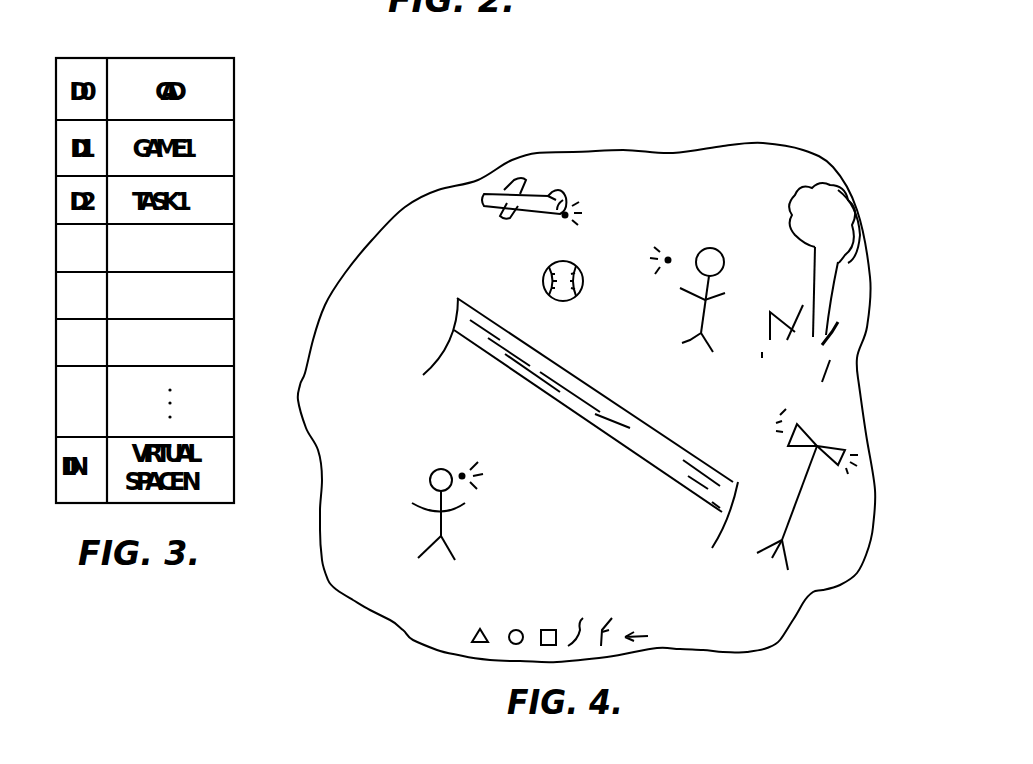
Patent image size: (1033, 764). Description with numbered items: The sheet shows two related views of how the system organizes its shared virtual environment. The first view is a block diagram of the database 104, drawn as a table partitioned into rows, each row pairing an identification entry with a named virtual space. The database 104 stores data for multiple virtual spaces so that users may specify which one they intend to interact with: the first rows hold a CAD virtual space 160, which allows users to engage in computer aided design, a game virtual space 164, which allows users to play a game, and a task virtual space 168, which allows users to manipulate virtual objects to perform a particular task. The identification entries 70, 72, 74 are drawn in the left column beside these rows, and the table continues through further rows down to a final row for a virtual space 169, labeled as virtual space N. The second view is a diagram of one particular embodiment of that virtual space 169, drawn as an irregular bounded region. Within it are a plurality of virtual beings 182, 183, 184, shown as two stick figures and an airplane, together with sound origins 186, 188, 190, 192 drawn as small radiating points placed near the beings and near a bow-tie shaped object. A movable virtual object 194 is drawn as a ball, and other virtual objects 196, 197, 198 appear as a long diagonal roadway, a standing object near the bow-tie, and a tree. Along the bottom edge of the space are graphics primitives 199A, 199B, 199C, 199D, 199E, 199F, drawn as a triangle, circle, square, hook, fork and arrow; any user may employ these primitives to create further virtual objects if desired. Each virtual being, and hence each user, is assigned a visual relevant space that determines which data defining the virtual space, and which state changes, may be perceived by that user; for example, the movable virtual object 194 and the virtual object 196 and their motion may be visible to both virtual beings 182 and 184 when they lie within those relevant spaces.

In FIG. 3, the database 104 is at (134, 52).
In FIG. 3, the first identification entry ID0 70 is at (56, 90).
In FIG. 3, the second identification entry ID1 72 is at (56, 147).
In FIG. 3, the third identification entry ID2 74 is at (56, 202).
In FIG. 3, the CAD virtual space 160 is at (234, 93).
In FIG. 3, the game virtual space 164 is at (234, 149).
In FIG. 3, the task virtual space 168 is at (234, 201).
In FIG. 3, the virtual space 169 is at (234, 466).
In FIG. 4, the virtual space 169 is at (835, 165).
In FIG. 4, the virtual being 182 is at (434, 468).
In FIG. 4, the virtual being 183 is at (482, 210).
In FIG. 4, the virtual being 184 is at (708, 247).
In FIG. 4, the sound origin 186 is at (460, 465).
In FIG. 4, the sound origin 188 is at (667, 253).
In FIG. 4, the sound origin 190 is at (833, 443).
In FIG. 4, the sound origin 192 is at (587, 201).
In FIG. 4, the movable virtual object 194 is at (568, 299).
In FIG. 4, the virtual object 196 is at (455, 305).
In FIG. 4, the virtual object 197 is at (790, 512).
In FIG. 4, the virtual object 198 is at (813, 275).
In FIG. 4, the graphics primitive 199A is at (470, 636).
In FIG. 4, the graphics primitive 199B is at (509, 630).
In FIG. 4, the graphics primitive 199C is at (547, 628).
In FIG. 4, the graphics primitive 199D is at (594, 615).
In FIG. 4, the graphics primitive 199E is at (634, 619).
In FIG. 4, the graphics primitive 199F is at (656, 634).